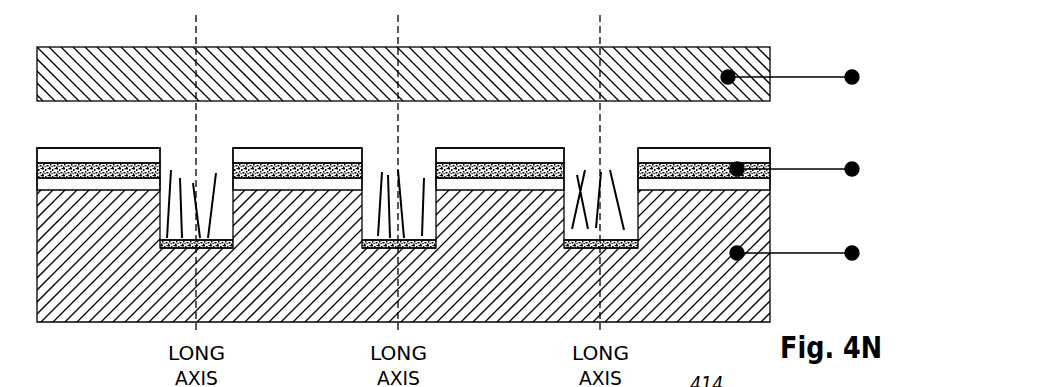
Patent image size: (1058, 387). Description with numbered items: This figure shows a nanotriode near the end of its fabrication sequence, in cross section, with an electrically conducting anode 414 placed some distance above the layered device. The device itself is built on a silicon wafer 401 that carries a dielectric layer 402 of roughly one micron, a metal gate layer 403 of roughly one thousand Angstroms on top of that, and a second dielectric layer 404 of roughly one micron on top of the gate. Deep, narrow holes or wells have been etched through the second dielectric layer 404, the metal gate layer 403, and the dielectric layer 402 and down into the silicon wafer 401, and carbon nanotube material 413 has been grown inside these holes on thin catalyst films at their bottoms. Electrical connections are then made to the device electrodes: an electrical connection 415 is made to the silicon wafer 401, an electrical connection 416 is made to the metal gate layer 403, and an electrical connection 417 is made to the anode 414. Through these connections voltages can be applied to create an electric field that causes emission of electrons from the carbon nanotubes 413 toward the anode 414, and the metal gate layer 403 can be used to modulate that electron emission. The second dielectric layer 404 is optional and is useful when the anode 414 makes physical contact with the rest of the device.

The silicon wafer 401 is at (770, 208).
The dielectric layer 402 is at (770, 180).
The metal gate layer 403 is at (770, 167).
The second dielectric layer 404 is at (770, 149).
The carbon nanotube material 413 is at (584, 172).
The anode 414 is at (703, 47).
The electrical connection 415 is at (812, 254).
The electrical connection 416 is at (837, 170).
The electrical connection 417 is at (811, 77).